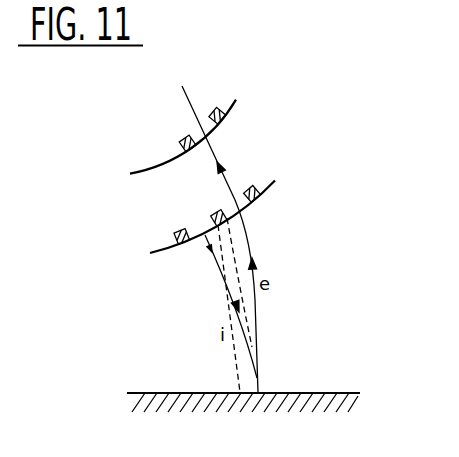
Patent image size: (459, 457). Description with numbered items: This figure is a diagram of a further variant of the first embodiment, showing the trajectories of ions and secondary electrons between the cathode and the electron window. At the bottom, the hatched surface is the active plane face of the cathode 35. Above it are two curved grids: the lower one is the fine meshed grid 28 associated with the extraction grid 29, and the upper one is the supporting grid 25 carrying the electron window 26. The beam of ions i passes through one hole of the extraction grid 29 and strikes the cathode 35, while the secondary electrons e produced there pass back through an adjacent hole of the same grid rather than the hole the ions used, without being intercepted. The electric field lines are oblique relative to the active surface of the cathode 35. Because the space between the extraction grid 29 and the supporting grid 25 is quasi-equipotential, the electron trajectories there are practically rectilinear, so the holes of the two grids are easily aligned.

The supporting grid 25 is at (214, 107).
The electron window 26 is at (240, 73).
The fine meshed grid 28 is at (276, 180).
The extraction grid 29 is at (250, 188).
The plane face of the cathode 35 is at (348, 393).